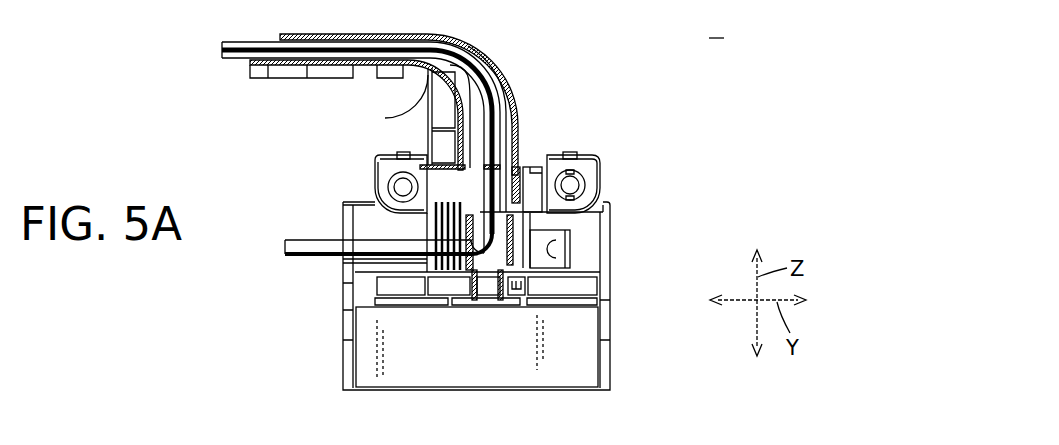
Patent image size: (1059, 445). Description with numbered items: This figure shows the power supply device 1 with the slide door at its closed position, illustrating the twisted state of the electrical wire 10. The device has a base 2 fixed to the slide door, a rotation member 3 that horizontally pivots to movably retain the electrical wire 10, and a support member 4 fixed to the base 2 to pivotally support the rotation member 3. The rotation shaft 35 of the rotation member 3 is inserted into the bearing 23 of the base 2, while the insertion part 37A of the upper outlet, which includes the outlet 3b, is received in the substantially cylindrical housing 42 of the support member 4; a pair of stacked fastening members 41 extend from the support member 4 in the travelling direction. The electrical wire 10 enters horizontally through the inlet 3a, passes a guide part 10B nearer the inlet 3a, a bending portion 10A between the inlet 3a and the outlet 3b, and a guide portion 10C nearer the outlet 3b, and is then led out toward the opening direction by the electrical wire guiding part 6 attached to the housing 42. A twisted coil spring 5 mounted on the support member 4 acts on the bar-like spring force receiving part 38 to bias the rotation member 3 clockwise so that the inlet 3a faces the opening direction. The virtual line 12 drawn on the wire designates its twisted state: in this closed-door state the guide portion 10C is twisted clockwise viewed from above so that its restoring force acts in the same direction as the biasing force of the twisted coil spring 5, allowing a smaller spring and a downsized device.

The power supply device 1 is at (717, 28).
The base 2 is at (607, 288).
The rotation member 3 is at (540, 210).
The inlet 3a is at (435, 232).
The outlet 3b is at (470, 152).
The support member 4 is at (600, 175).
The twisted coil spring 5 is at (517, 176).
The electrical wire guiding part 6 is at (472, 41).
The electrical wire 10 is at (245, 42).
The bending portion 10A is at (557, 229).
The guide part 10B is at (402, 256).
The guide portion 10C is at (523, 150).
The virtual line 12 is at (492, 98).
The bearing 23 is at (470, 302).
The rotation shaft 35 is at (482, 292).
The insertion part 37A is at (523, 165).
The spring force receiving part 38 is at (418, 170).
The stacked fastening member 41 is at (385, 152).
The housing 42 is at (560, 153).